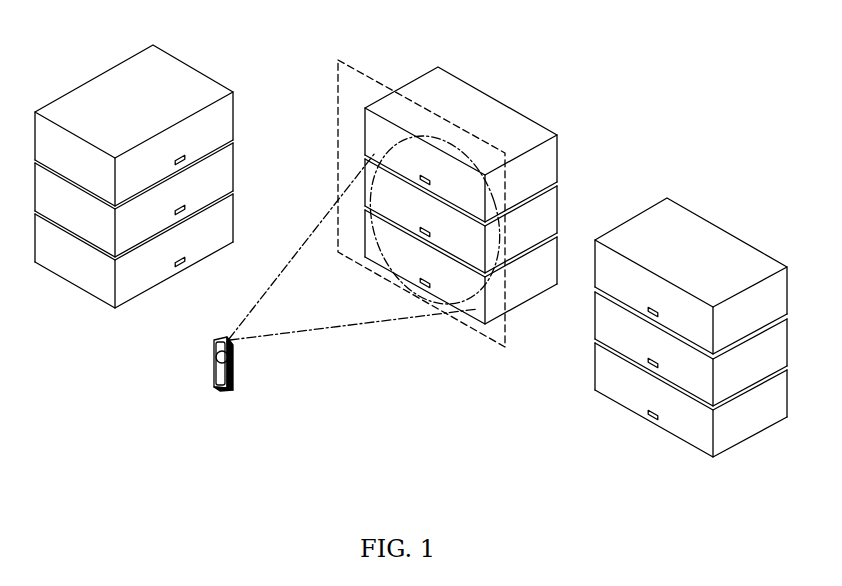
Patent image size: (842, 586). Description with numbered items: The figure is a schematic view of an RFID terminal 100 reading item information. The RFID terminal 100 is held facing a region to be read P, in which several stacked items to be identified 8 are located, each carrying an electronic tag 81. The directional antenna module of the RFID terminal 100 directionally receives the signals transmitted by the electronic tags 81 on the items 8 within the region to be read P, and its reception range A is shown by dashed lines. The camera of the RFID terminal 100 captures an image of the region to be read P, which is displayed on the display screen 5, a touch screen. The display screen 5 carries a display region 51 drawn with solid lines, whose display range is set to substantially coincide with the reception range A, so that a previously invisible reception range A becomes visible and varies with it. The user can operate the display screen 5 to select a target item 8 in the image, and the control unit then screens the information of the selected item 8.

The item to be identified 8 is at (512, 125).
The electronic tag 81 is at (182, 156).
The RFID terminal 100 is at (209, 367).
The display screen 5 is at (212, 372).
The display region 51 is at (236, 360).
The region to be read P is at (350, 68).
The reception range A is at (494, 295).